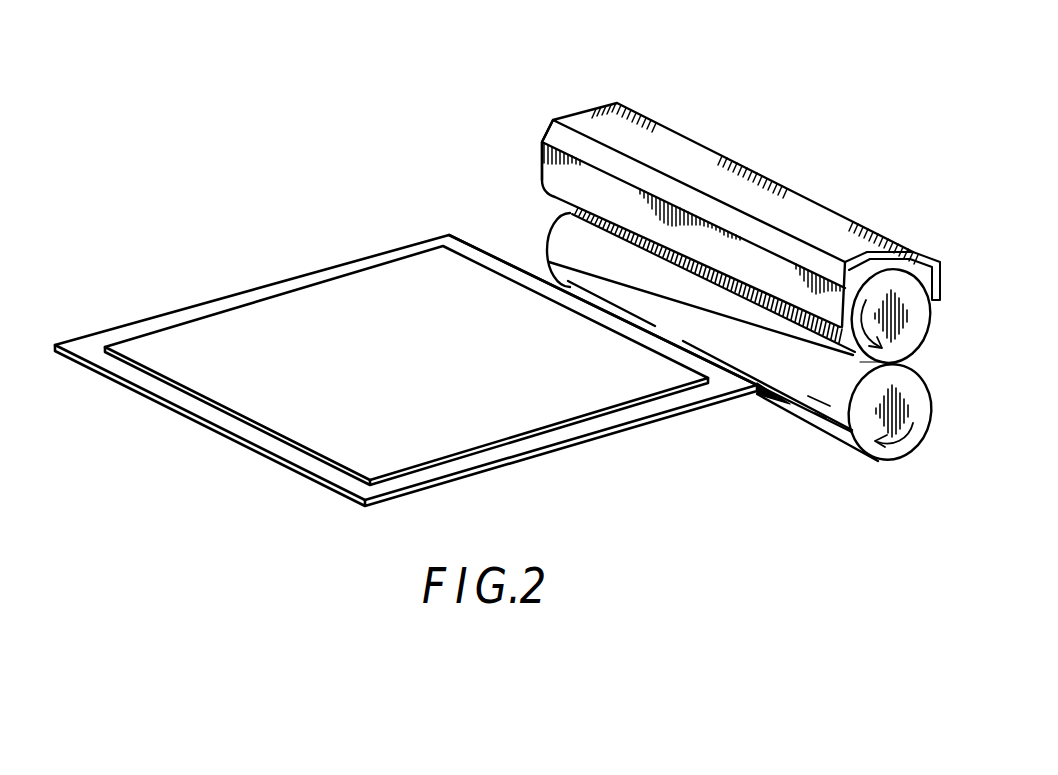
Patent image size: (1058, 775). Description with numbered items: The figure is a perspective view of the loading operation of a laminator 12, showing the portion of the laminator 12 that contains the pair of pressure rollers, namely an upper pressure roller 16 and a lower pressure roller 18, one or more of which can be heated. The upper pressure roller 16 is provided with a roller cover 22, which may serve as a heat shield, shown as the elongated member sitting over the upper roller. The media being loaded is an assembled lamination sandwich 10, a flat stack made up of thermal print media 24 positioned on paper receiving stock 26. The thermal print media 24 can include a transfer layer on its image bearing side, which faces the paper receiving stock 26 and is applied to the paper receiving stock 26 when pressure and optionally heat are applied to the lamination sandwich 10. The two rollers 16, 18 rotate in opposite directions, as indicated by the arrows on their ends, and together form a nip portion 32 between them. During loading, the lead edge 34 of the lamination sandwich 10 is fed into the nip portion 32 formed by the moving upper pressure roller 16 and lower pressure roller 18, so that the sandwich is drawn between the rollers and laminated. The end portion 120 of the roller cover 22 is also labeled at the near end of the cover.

The lamination sandwich 10 is at (406, 381).
The laminator 12 is at (741, 193).
The upper pressure roller 16 is at (566, 212).
The lower pressure roller 18 is at (772, 374).
The roller cover 22 is at (707, 162).
The thermal print media 24 is at (237, 388).
The paper receiving stock 26 is at (406, 345).
The nip portion 32 is at (900, 372).
The lead edge 34 is at (448, 230).
The end portion of applicator bar 120 is at (571, 113).